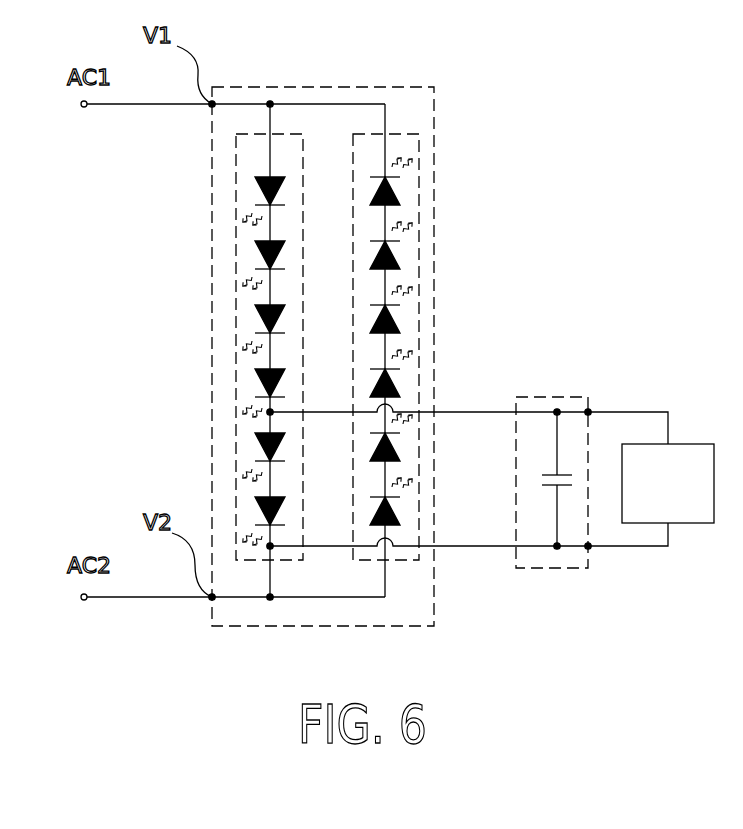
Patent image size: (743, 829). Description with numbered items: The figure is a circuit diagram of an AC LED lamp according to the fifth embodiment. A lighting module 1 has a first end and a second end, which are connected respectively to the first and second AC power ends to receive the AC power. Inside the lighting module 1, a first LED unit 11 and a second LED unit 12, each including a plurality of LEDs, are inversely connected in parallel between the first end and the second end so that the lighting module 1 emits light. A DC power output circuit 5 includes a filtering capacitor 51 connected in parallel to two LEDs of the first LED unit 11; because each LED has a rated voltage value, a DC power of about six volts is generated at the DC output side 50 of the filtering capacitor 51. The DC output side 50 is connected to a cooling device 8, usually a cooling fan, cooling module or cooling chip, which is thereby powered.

The lighting module 1 is at (212, 357).
The first LED unit 11 is at (283, 128).
The second LED unit 12 is at (374, 130).
The DC power output circuit 5 is at (540, 395).
The DC output side 50 is at (588, 412).
The filtering capacitor 51 is at (552, 475).
The cooling device 8 is at (677, 453).